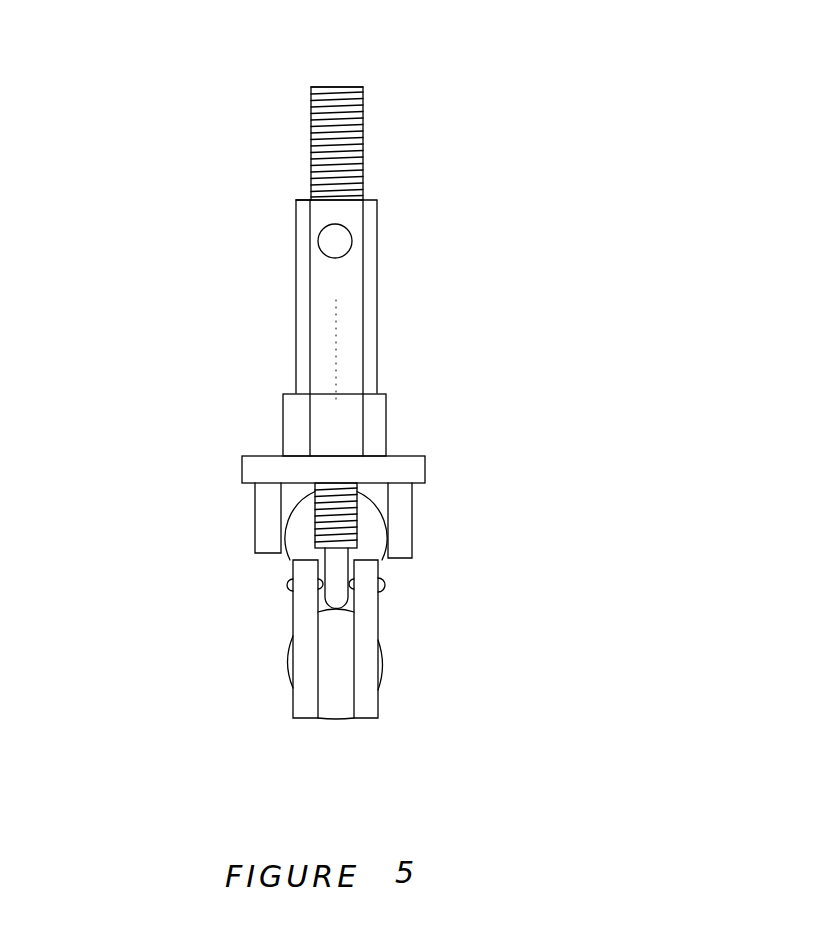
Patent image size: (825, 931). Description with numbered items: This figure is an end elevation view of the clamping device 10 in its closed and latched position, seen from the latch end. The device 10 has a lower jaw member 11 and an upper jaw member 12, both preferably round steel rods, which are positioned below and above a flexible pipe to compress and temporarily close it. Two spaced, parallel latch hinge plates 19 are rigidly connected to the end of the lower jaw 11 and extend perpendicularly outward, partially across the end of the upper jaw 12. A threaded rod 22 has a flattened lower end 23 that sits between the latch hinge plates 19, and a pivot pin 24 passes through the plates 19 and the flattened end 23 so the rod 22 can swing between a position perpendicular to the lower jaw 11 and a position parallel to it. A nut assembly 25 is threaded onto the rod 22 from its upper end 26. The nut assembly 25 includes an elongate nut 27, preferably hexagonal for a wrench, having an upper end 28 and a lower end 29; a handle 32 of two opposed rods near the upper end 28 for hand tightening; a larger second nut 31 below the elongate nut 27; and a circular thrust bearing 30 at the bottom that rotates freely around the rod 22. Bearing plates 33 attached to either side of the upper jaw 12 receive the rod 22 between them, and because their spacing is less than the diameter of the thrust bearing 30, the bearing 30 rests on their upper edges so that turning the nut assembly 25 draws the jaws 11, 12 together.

The clamping device 10 is at (521, 300).
The lower jaw member 11 is at (282, 664).
The upper jaw member 12 is at (293, 556).
The latch hinge plates 19 is at (366, 694).
The threaded rod 22 is at (363, 142).
The flattened lower end 23 is at (348, 568).
The pivot pin 24 is at (383, 583).
The nut assembly 25 is at (287, 366).
The upper end 26 is at (340, 86).
The elongate nut 27 is at (345, 296).
The upper end 28 is at (298, 200).
The lower end 29 is at (340, 393).
The thrust bearing 30 is at (408, 470).
The second nut 31 is at (372, 420).
The handle 32 is at (358, 243).
The bearing plates 33 is at (267, 510).